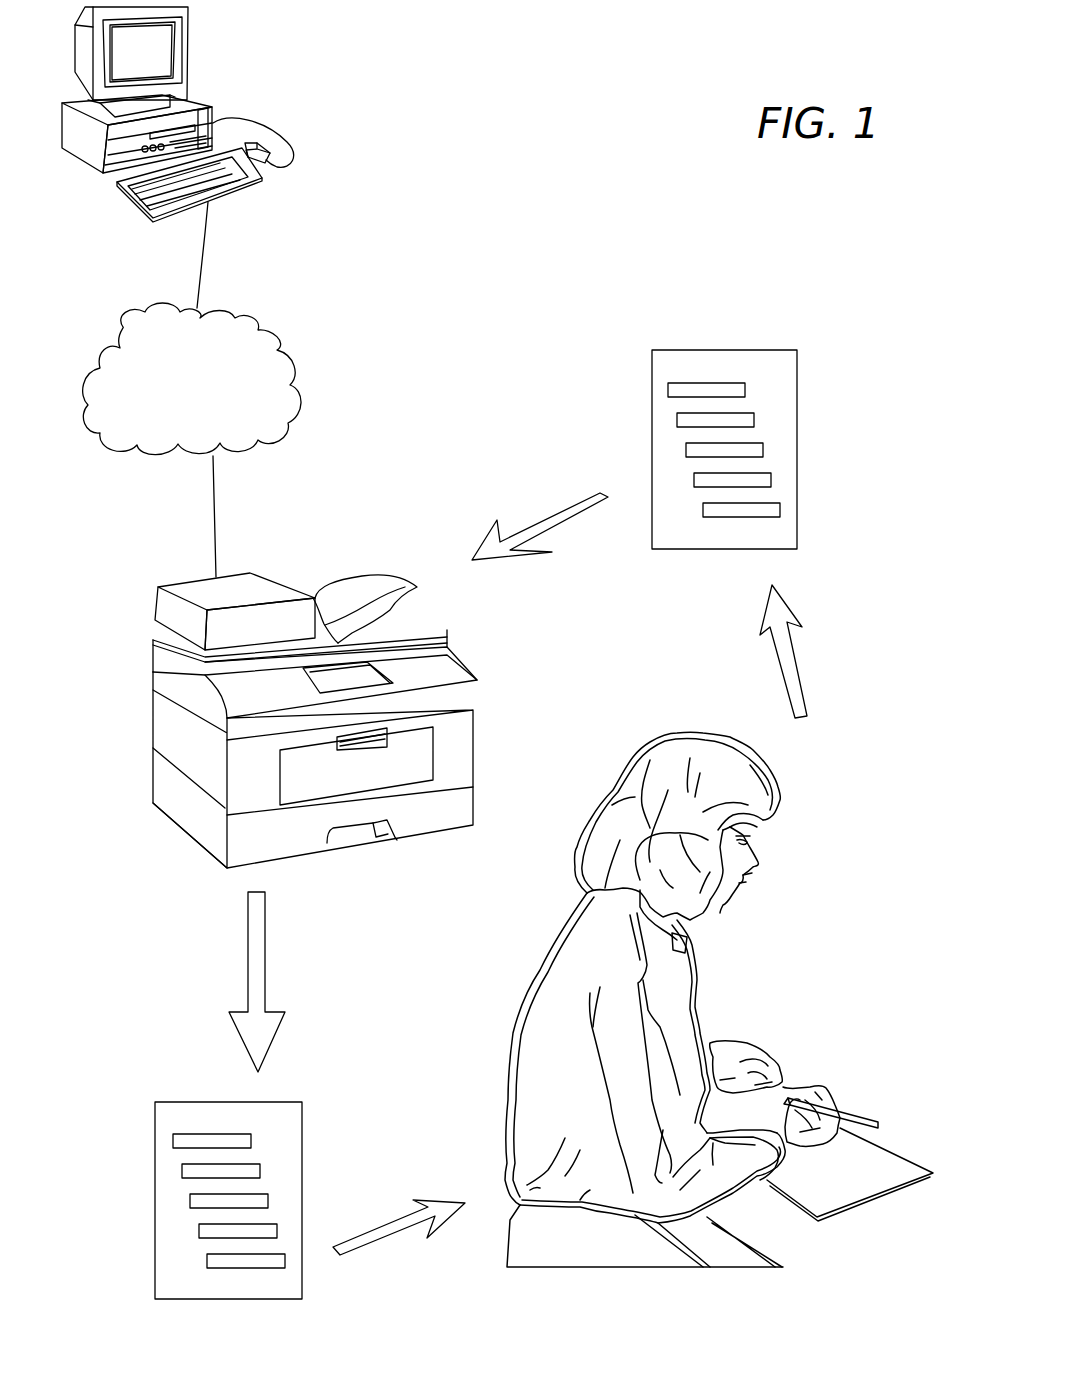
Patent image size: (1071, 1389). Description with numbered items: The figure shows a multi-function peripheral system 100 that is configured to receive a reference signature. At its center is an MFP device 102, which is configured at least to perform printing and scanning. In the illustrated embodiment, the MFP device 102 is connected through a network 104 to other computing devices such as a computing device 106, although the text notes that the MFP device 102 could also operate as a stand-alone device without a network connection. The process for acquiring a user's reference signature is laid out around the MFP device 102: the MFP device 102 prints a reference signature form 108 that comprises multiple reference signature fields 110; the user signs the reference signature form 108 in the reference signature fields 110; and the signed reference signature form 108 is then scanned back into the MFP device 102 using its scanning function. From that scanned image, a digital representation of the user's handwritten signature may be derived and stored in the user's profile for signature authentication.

The multi-function peripheral system 100 is at (590, 160).
The MFP device 102 is at (363, 596).
The network 104 is at (260, 318).
The computing device 106 is at (188, 37).
The reference signature form 108 is at (778, 377).
The reference signature fields 110 is at (707, 373).